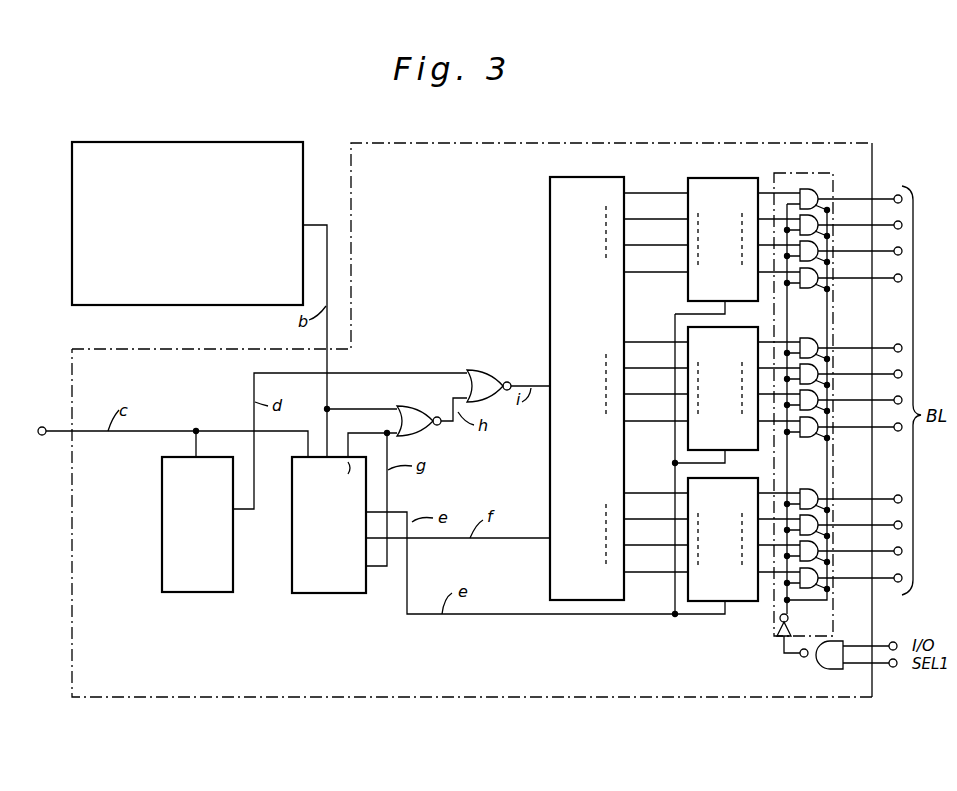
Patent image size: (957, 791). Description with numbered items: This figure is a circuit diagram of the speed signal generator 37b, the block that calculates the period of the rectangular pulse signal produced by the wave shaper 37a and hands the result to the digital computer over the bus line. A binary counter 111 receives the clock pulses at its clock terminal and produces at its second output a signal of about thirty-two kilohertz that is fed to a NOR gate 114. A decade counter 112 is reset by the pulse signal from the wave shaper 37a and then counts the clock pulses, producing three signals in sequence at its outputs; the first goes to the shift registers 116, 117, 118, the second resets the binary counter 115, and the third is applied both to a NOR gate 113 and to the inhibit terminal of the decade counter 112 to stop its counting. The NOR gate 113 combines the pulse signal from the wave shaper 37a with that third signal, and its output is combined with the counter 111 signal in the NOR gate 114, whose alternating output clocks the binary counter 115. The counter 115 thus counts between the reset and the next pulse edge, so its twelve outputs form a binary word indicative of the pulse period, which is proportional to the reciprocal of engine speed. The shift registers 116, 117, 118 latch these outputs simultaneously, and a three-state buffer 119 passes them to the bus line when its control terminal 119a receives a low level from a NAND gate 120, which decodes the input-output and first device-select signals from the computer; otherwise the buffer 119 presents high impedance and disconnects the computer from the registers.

The wave shaper 37a is at (212, 144).
The speed signal generator 37b is at (638, 144).
The binary counter 111 is at (207, 577).
The decade counter 112 is at (325, 580).
The NOR gate 113 is at (405, 405).
The NOR gate 114 is at (480, 369).
The binary counter 115 is at (591, 317).
The shift register 116 is at (732, 252).
The shift register 117 is at (732, 401).
The shift register 118 is at (732, 552).
The three-state buffer 119 is at (818, 172).
The control terminal 119a is at (784, 645).
The NAND gate 120 is at (815, 668).